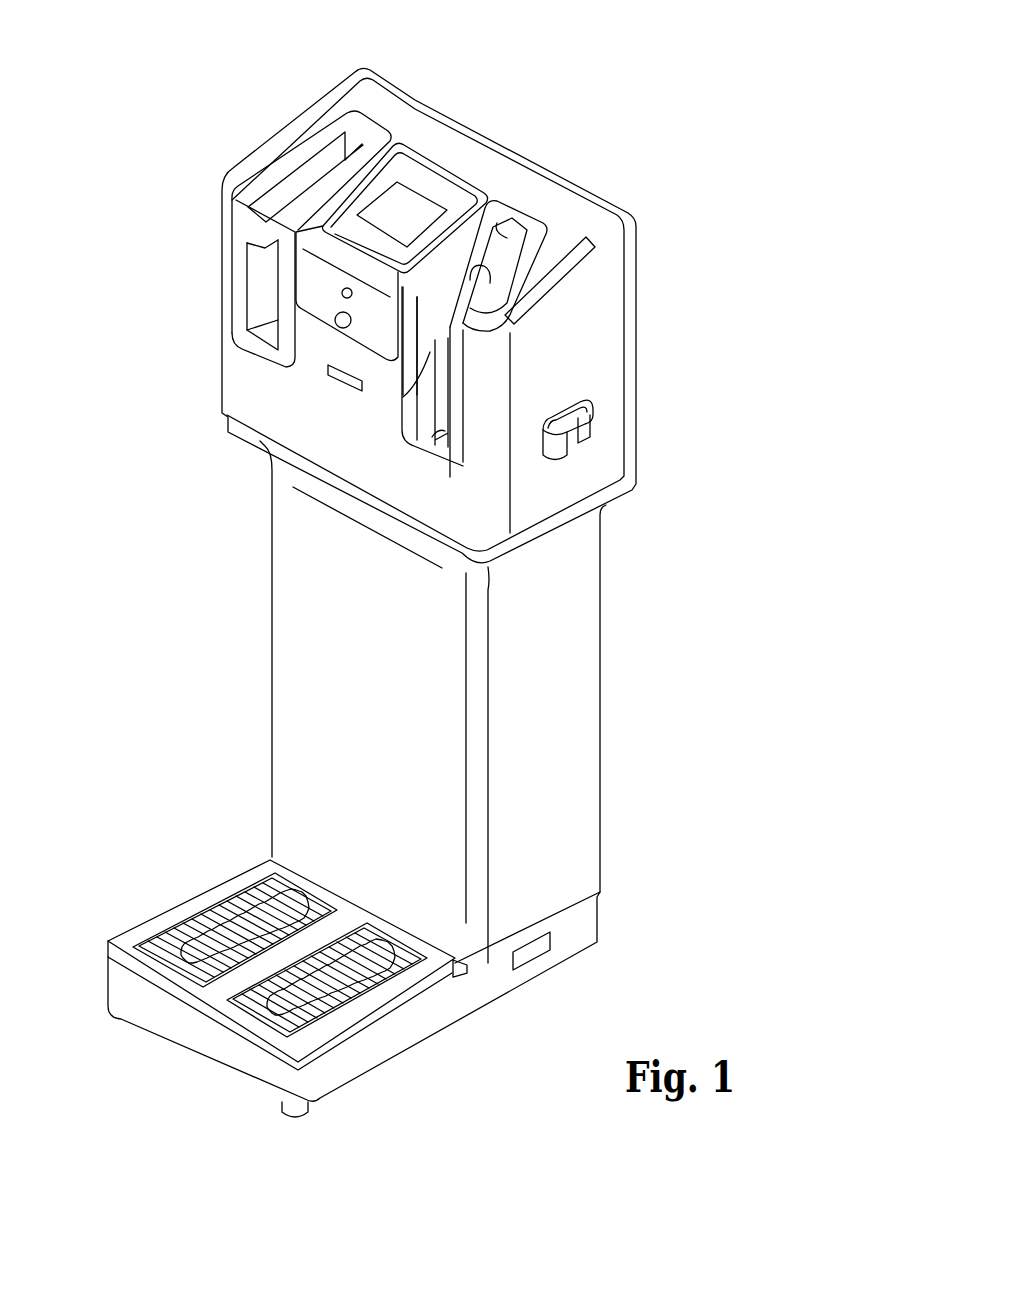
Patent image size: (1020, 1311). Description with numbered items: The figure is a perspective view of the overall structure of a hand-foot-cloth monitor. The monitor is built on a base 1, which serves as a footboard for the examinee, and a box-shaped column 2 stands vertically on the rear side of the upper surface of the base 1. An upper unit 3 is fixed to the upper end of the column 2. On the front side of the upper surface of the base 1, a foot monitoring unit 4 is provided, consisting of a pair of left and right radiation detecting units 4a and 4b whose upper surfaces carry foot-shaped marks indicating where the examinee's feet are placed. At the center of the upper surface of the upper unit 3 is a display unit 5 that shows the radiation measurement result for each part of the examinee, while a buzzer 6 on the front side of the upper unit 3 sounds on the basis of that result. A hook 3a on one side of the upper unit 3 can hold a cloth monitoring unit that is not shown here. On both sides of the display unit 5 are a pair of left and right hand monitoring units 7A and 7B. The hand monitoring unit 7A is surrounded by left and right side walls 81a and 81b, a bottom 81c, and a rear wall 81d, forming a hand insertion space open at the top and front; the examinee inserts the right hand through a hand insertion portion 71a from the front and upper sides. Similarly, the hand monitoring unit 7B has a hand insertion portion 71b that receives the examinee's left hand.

The base 1 is at (471, 990).
The column 2 is at (572, 717).
The upper unit 3 is at (660, 290).
The hook 3a is at (596, 430).
The foot monitoring unit 4 is at (85, 1077).
The radiation detecting unit 4a is at (208, 950).
The radiation detecting unit 4b is at (288, 1000).
The display unit 5 is at (397, 208).
The buzzer 6 is at (333, 381).
The hand monitoring unit 7A is at (545, 219).
The hand monitoring unit 7B is at (318, 143).
The hand insertion portion 71a is at (450, 297).
The hand insertion portion 71b is at (300, 233).
The side wall 81a is at (403, 398).
The side wall 81b is at (480, 265).
The bottom 81c is at (428, 432).
The rear wall 81d is at (453, 317).